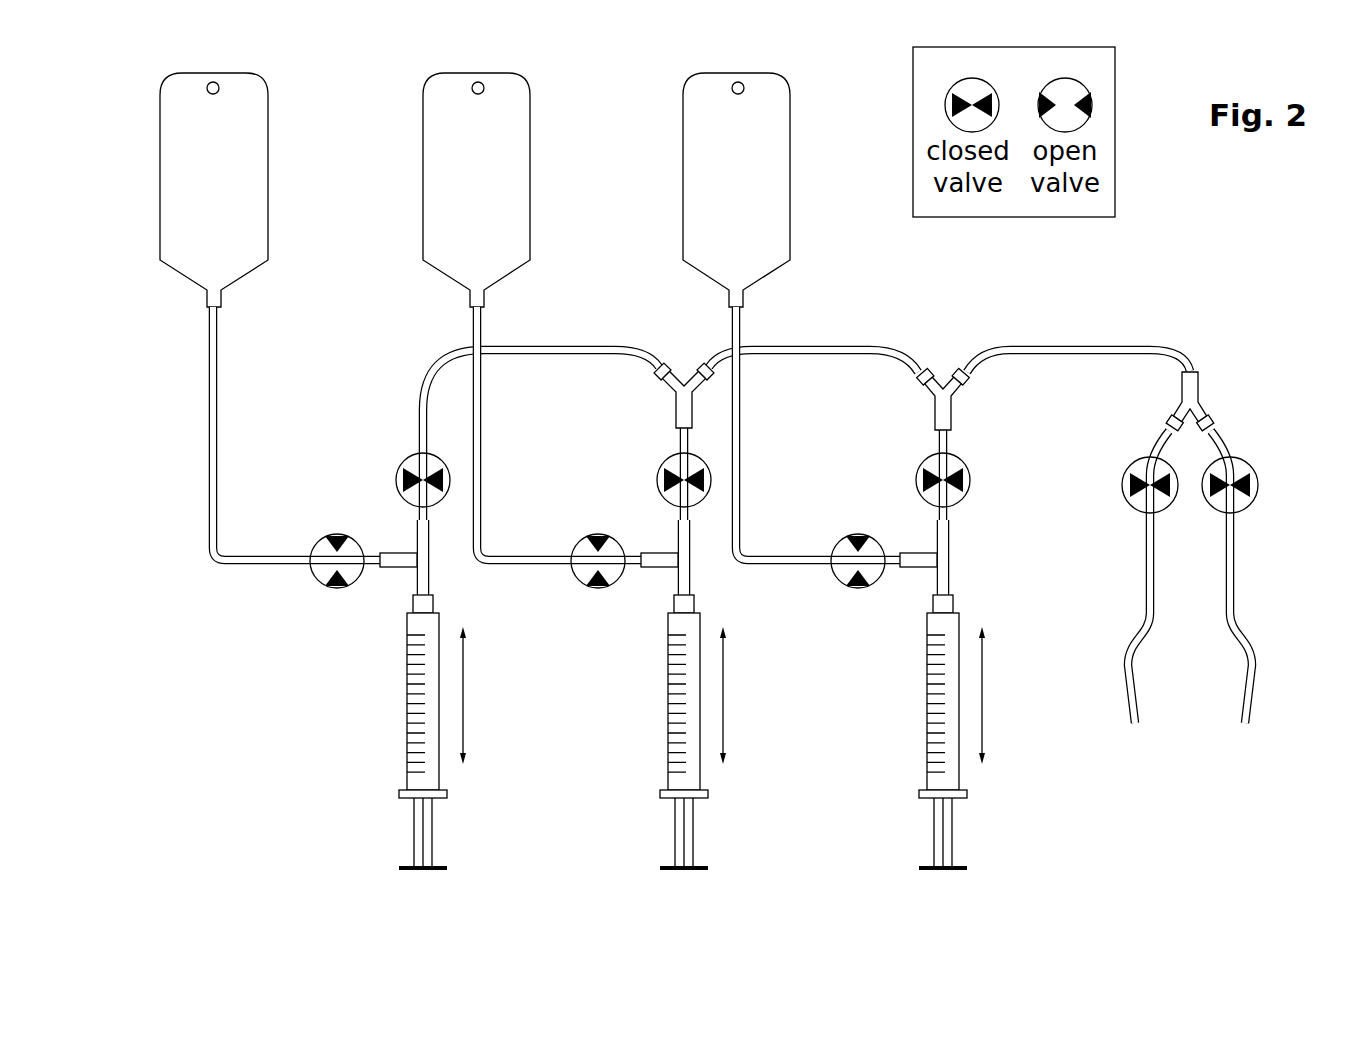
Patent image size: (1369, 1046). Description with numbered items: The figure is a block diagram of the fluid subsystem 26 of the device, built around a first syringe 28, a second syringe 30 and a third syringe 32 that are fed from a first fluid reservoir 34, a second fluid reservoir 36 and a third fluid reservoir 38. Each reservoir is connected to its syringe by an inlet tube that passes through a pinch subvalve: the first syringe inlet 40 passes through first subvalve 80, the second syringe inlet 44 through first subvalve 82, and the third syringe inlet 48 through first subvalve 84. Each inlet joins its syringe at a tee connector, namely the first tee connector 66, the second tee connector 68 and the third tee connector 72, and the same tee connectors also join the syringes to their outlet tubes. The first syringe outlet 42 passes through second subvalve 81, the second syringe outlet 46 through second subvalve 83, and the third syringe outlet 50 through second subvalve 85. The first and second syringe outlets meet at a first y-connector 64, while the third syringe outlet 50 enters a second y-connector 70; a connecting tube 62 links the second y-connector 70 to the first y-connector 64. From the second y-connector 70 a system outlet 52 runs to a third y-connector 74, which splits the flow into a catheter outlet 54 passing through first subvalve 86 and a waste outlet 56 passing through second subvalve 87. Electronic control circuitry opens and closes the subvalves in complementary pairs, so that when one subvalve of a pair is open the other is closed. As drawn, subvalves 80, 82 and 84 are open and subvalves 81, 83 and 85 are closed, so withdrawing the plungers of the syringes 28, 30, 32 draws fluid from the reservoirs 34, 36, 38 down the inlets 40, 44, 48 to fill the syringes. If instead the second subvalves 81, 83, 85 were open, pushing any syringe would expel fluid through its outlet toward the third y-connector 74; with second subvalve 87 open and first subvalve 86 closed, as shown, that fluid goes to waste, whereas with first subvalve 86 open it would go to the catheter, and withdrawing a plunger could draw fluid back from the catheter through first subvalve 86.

The fluid subsystem 26 is at (821, 318).
The first syringe 28 is at (404, 760).
The second syringe 30 is at (665, 760).
The third syringe 32 is at (918, 757).
The first fluid reservoir 34 is at (257, 118).
The second fluid reservoir 36 is at (517, 118).
The third fluid reservoir 38 is at (775, 118).
The first syringe inlet 40 is at (212, 406).
The first syringe outlet 42 is at (442, 372).
The second syringe inlet 44 is at (482, 377).
The second syringe outlet 46 is at (683, 443).
The third syringe inlet 48 is at (742, 378).
The third syringe outlet 50 is at (941, 450).
The system outlet 52 is at (1018, 352).
The catheter outlet 54 is at (1136, 610).
The waste outlet 56 is at (1244, 610).
The connecting tube 62 is at (868, 342).
The first y-connector 64 is at (686, 366).
The first tee connector 66 is at (408, 600).
The second tee connector 68 is at (665, 600).
The second y-connector 70 is at (945, 370).
The third tee connector 72 is at (931, 575).
The third y-connector 74 is at (1207, 398).
The first subvalve of first valve 80 is at (314, 580).
The second subvalve of first valve 81 is at (401, 478).
The first subvalve of second valve 82 is at (575, 580).
The second subvalve of second valve 83 is at (663, 478).
The first subvalve of third valve 84 is at (841, 582).
The second subvalve of third valve 85 is at (919, 478).
The first subvalve of fourth valve 86 is at (1122, 481).
The second subvalve of fourth valve 87 is at (1258, 481).